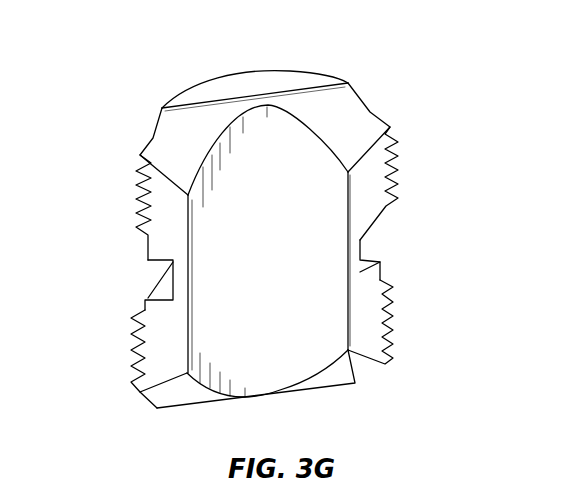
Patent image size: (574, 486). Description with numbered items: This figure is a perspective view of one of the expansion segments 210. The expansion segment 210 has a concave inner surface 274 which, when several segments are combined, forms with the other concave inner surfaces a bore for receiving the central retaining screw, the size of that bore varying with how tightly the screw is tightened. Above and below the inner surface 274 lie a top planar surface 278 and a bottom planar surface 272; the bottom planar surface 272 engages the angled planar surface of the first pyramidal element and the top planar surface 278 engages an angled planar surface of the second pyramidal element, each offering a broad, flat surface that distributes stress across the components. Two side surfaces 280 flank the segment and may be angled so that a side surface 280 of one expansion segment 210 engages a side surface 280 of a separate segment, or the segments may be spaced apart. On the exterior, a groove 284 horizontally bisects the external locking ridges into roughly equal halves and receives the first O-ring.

The expansion segment 210 is at (257, 215).
The bottom planar surface 272 is at (337, 380).
The inner surface 274 is at (305, 261).
The top planar surface 278 is at (370, 113).
The side surface 280 is at (372, 181).
The groove 284 is at (160, 275).